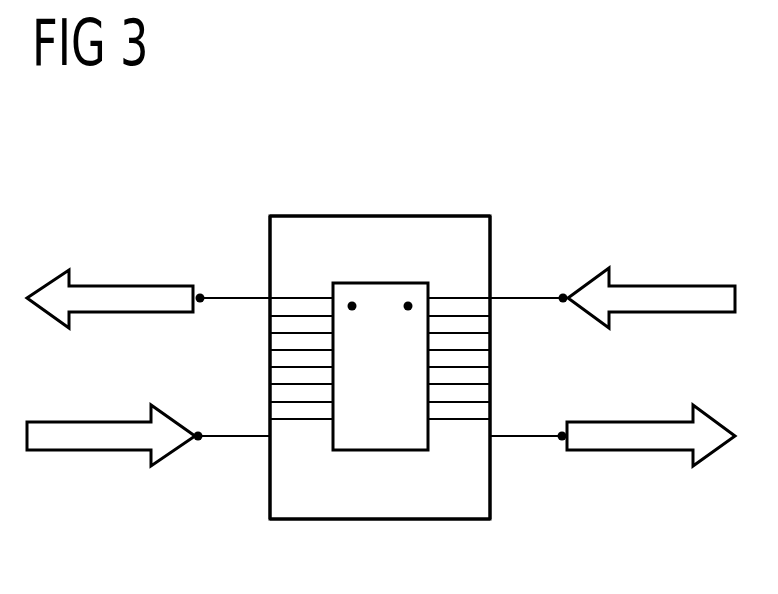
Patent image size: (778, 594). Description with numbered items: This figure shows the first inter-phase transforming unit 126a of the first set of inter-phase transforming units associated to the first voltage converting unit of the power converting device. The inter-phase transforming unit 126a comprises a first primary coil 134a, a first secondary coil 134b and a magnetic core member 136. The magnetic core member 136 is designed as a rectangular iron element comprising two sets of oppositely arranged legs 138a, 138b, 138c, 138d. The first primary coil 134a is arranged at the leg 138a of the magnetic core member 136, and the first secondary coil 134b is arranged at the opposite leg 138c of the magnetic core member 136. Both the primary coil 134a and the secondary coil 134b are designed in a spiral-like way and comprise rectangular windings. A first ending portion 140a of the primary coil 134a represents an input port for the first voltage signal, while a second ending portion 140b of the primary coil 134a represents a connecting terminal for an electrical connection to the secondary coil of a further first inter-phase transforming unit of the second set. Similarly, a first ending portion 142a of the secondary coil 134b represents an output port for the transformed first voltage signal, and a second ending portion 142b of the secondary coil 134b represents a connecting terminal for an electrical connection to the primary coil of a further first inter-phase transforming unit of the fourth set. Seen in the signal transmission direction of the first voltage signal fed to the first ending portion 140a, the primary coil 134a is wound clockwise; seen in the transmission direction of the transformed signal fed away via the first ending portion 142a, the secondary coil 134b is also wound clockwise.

The first inter-phase transforming unit 126a is at (600, 172).
The magnetic core member 136 is at (328, 227).
The leg 138a is at (461, 283).
The leg 138b is at (380, 510).
The leg 138c is at (297, 283).
The leg 138d is at (379, 225).
The first primary coil 134a is at (455, 422).
The first secondary coil 134b is at (303, 422).
The first ending portion of the primary coil 140a is at (562, 294).
The second ending portion of the primary coil 140b is at (562, 440).
The first ending portion of the secondary coil 142a is at (200, 294).
The second ending portion of the secondary coil 142b is at (200, 440).